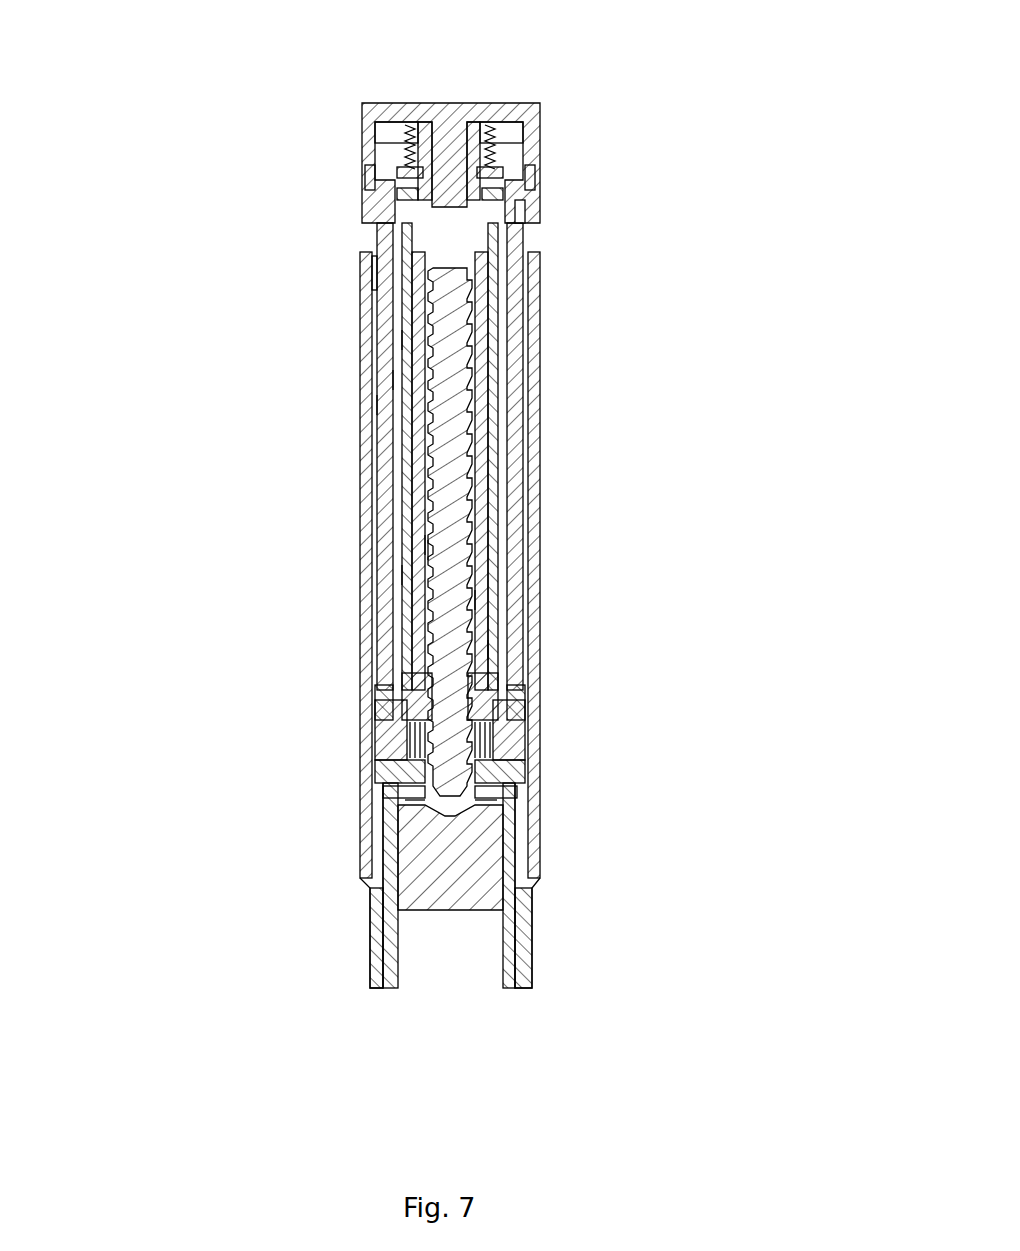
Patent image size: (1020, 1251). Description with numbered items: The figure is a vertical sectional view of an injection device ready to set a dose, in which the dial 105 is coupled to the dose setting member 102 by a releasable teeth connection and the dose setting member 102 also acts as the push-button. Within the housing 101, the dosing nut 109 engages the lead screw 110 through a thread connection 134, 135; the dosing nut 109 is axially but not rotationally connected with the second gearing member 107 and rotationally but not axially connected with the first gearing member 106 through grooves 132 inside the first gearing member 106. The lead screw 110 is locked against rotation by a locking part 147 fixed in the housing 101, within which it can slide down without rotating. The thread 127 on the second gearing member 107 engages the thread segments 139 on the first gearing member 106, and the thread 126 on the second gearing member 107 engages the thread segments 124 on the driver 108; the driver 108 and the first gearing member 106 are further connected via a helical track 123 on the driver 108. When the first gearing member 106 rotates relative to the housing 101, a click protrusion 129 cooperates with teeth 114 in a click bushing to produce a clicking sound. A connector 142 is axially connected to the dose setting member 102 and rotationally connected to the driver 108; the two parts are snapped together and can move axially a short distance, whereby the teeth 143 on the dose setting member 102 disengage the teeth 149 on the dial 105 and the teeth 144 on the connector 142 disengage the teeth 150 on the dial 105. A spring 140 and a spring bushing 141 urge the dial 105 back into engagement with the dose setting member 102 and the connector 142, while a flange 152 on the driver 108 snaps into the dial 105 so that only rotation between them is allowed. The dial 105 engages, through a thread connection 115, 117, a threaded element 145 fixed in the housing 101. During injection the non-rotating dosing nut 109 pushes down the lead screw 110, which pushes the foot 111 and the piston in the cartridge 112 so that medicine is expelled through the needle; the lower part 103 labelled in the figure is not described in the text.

The housing 101 is at (334, 465).
The dose setting member 102 is at (340, 88).
The cartridge holder 103 is at (346, 953).
The dial 105 is at (534, 235).
The first gearing member 106 is at (524, 409).
The second gearing member 107 is at (492, 483).
The driver 108 is at (511, 288).
The dosing nut 109 is at (504, 713).
The lead screw 110 is at (464, 551).
The foot 111 is at (490, 818).
The cartridge 112 is at (521, 944).
The teeth 114 is at (393, 753).
The thread connection 115 is at (388, 380).
The thread connection 117 is at (383, 265).
The helical track 123 is at (403, 338).
The thread segments 124 is at (417, 544).
The thread 126 is at (378, 405).
The thread 127 is at (487, 650).
The click protrusion 129 is at (336, 767).
The grooves 132 is at (403, 733).
The thread connection 134 is at (470, 600).
The thread connection 135 is at (380, 685).
The thread segments 139 is at (407, 572).
The spring 140 is at (508, 122).
The spring bushing 141 is at (408, 116).
The connector 142 is at (495, 201).
The teeth 143 is at (375, 150).
The teeth 144 is at (378, 173).
The threaded element 145 is at (547, 343).
The locking part 147 is at (521, 780).
The teeth 149 is at (378, 132).
The teeth 150 is at (537, 180).
The flange 152 is at (405, 200).